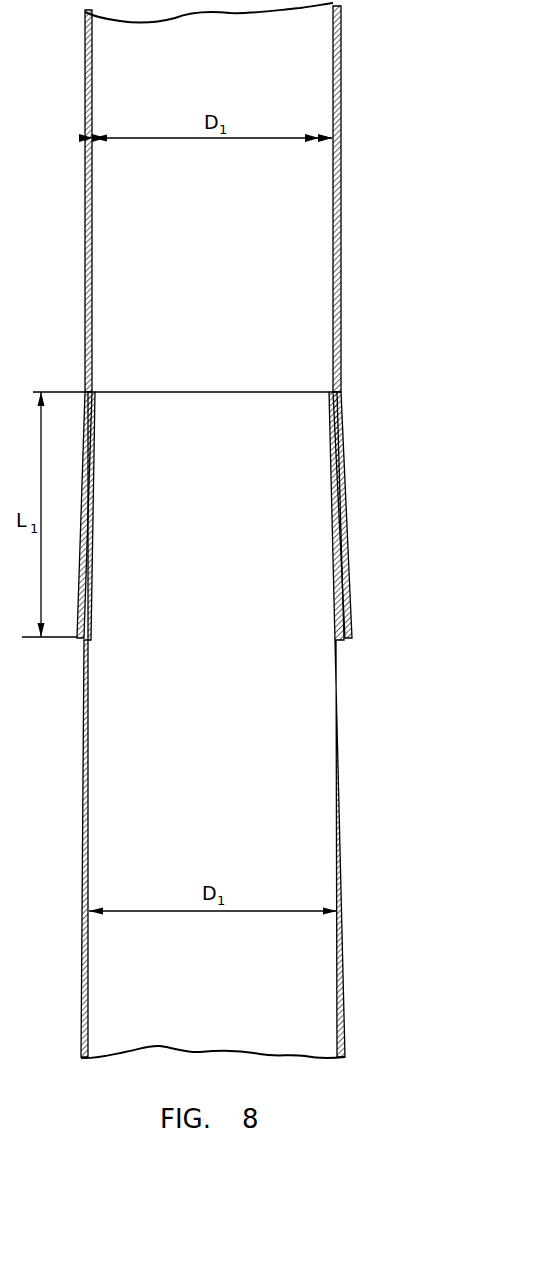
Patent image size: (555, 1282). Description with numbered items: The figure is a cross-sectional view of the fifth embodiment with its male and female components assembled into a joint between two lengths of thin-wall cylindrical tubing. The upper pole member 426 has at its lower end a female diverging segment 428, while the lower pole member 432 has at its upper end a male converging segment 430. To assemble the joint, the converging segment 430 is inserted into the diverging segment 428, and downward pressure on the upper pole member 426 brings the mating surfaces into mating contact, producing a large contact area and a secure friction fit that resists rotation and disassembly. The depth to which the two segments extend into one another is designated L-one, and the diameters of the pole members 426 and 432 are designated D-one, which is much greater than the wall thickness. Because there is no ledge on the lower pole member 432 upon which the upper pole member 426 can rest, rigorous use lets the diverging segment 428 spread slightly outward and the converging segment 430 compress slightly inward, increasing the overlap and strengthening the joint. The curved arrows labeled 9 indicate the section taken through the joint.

The upper pole member 426 is at (343, 205).
The female diverging segment 428 is at (357, 637).
The male converging segment 430 is at (307, 399).
The lower pole member 432 is at (346, 866).
The section line 9- 9 is at (311, 539).